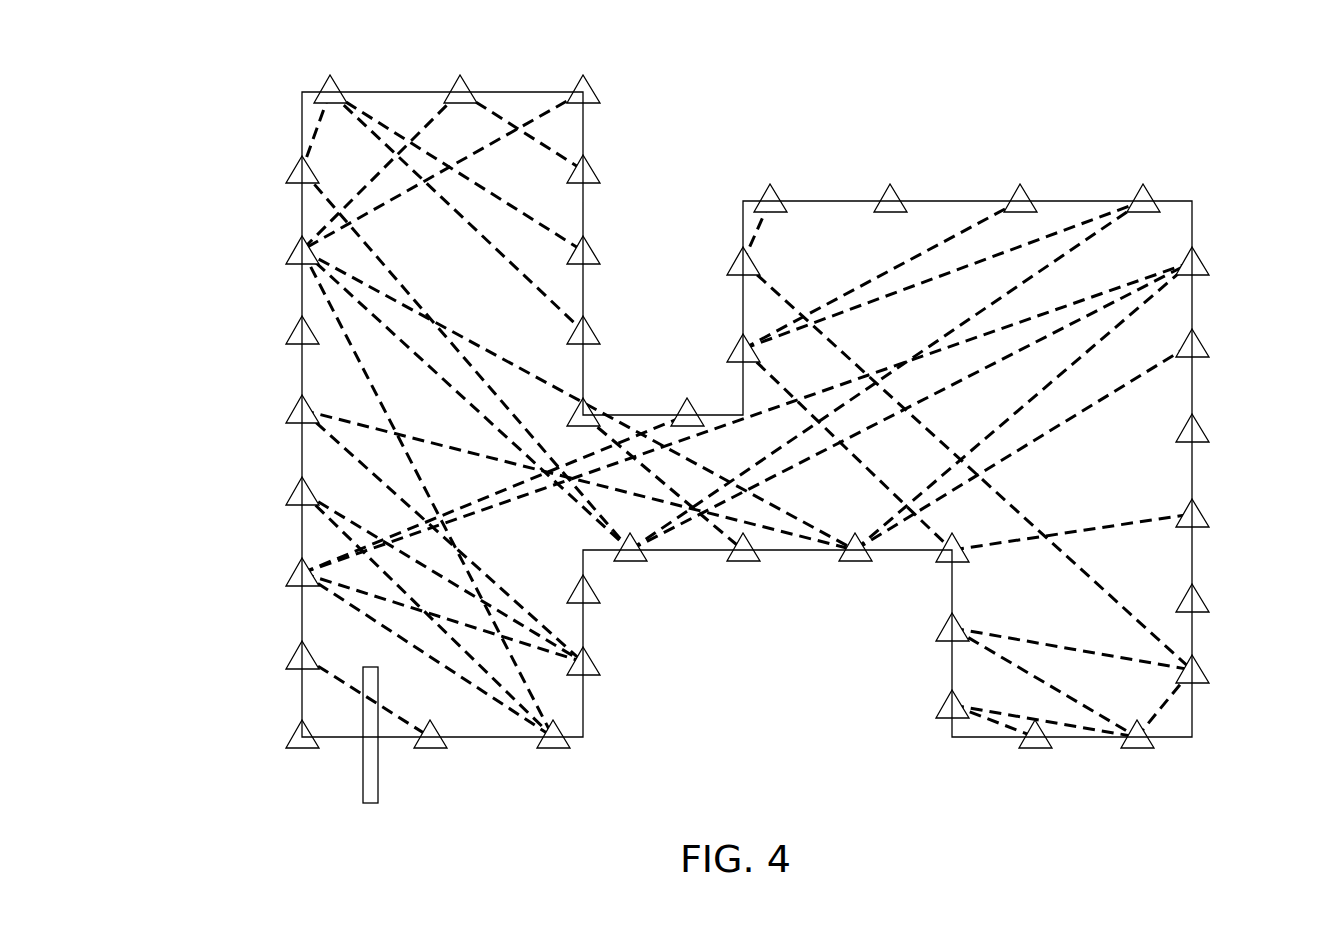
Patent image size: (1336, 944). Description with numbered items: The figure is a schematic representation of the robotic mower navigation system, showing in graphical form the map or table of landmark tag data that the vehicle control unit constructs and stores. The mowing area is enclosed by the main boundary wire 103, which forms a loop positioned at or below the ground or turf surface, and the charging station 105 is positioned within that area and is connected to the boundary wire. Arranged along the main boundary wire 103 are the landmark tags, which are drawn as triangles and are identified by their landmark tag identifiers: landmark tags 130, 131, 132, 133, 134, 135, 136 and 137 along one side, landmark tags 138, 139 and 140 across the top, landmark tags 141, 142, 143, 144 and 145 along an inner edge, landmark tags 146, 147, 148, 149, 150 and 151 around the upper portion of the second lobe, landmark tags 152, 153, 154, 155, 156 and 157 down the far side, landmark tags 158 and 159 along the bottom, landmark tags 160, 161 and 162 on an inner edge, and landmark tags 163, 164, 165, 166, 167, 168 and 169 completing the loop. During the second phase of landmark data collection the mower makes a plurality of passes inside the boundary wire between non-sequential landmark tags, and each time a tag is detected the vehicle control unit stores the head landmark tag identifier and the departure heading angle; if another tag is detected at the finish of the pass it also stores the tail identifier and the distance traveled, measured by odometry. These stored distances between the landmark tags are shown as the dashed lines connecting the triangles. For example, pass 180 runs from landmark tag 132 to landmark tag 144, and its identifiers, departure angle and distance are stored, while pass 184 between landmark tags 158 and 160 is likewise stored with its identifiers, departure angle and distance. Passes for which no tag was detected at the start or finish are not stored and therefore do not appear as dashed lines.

The main boundary wire 103 is at (830, 200).
The charging station 105 is at (370, 758).
The landmark tag 130 is at (293, 733).
The landmark tag 131 is at (293, 652).
The landmark tag 132 is at (293, 570).
The landmark tag 133 is at (293, 490).
The landmark tag 134 is at (293, 408).
The landmark tag 135 is at (293, 330).
The landmark tag 136 is at (293, 248).
The landmark tag 137 is at (294, 166).
The landmark tag 138 is at (334, 76).
The landmark tag 139 is at (464, 76).
The landmark tag 140 is at (597, 90).
The landmark tag 141 is at (598, 171).
The landmark tag 142 is at (598, 252).
The landmark tag 143 is at (598, 331).
The landmark tag 144 is at (597, 411).
The landmark tag 145 is at (696, 412).
The landmark tag 146 is at (735, 352).
The landmark tag 147 is at (735, 265).
The landmark tag 148 is at (775, 182).
The landmark tag 149 is at (895, 182).
The landmark tag 150 is at (1025, 182).
The landmark tag 151 is at (1148, 182).
The landmark tag 152 is at (1205, 262).
The landmark tag 153 is at (1205, 345).
The landmark tag 154 is at (1205, 430).
The landmark tag 155 is at (1205, 515).
The landmark tag 156 is at (1205, 600).
The landmark tag 157 is at (1205, 671).
The landmark tag 158 is at (1145, 750).
The landmark tag 159 is at (1042, 750).
The landmark tag 160 is at (940, 712).
The landmark tag 161 is at (963, 630).
The landmark tag 162 is at (947, 545).
The landmark tag 163 is at (861, 566).
The landmark tag 164 is at (749, 566).
The landmark tag 165 is at (636, 566).
The landmark tag 166 is at (574, 584).
The landmark tag 167 is at (597, 676).
The landmark tag 168 is at (560, 750).
The landmark tag 169 is at (437, 750).
The pass 180 is at (490, 458).
The pass 184 is at (1017, 713).